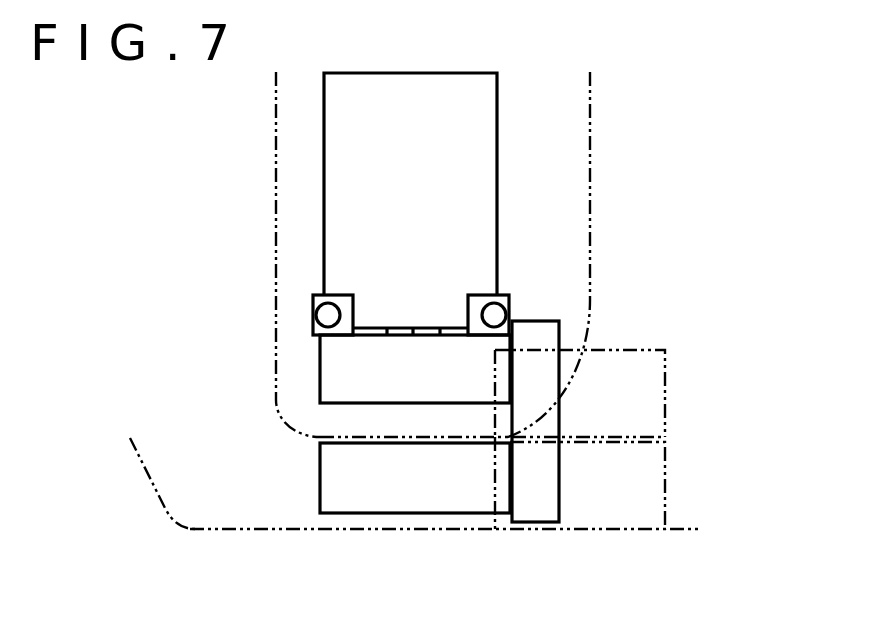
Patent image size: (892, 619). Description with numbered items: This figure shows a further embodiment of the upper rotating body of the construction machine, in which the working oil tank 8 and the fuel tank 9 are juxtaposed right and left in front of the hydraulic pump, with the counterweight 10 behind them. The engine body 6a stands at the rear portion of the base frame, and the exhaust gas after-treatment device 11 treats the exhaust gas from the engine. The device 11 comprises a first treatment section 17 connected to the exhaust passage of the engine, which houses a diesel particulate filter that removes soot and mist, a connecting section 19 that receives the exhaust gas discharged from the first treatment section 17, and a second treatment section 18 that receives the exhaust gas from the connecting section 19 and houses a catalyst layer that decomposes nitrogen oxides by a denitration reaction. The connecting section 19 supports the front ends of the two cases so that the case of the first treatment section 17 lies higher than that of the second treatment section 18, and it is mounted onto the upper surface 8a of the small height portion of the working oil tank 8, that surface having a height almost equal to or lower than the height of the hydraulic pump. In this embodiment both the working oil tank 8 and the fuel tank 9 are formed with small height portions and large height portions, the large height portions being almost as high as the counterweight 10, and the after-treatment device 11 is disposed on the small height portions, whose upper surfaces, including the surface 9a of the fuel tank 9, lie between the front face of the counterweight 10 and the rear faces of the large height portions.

The engine body 6a is at (352, 176).
The exhaust gas after-treatment device 11 is at (297, 372).
The second treatment section 18 is at (413, 355).
The connecting section 19 is at (537, 333).
The first treatment section 17 is at (405, 481).
The working oil tank 8 is at (608, 397).
The upper surface 8a is at (503, 377).
The fuel tank 9 is at (608, 482).
The second connection portion (9b) 9a is at (504, 521).
The counterweight 10 is at (170, 474).